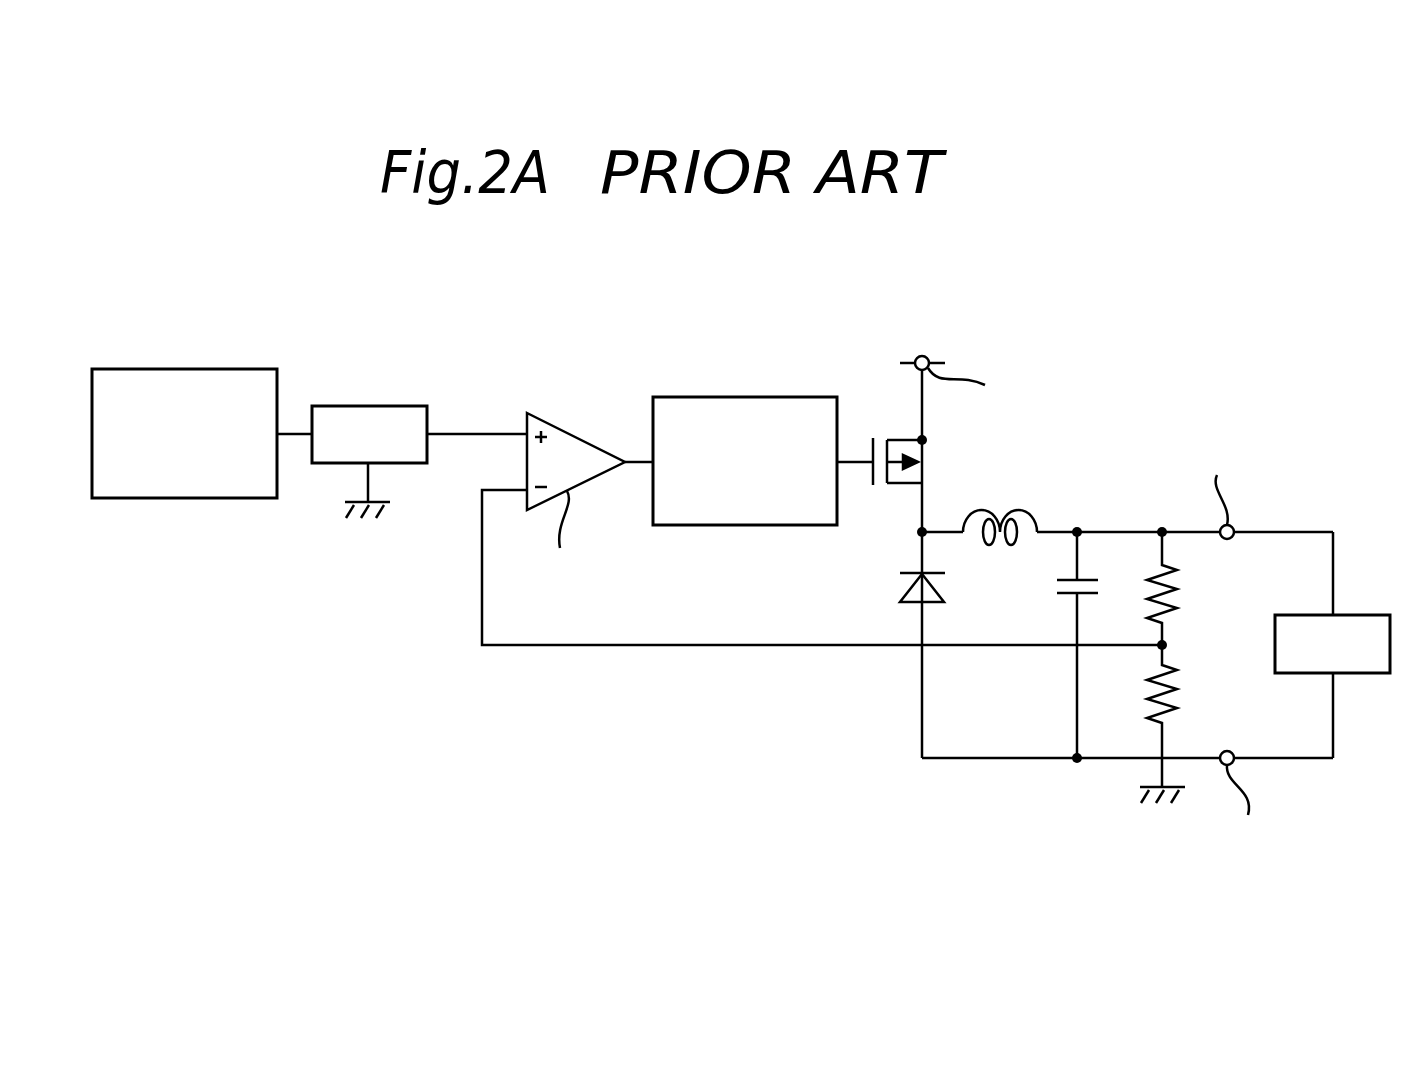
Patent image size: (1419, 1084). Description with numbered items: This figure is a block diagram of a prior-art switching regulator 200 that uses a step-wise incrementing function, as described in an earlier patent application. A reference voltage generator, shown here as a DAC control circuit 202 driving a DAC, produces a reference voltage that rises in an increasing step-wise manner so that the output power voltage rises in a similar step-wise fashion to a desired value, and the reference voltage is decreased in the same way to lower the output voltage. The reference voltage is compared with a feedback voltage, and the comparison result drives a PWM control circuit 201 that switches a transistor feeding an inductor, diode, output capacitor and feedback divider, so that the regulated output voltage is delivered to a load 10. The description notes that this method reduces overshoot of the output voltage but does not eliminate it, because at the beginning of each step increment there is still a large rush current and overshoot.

The switching regulator (prior art) 200 is at (1148, 330).
The PWM control circuit 201 is at (748, 397).
The DAC control circuit 202 is at (187, 369).
The load 10 is at (1353, 615).